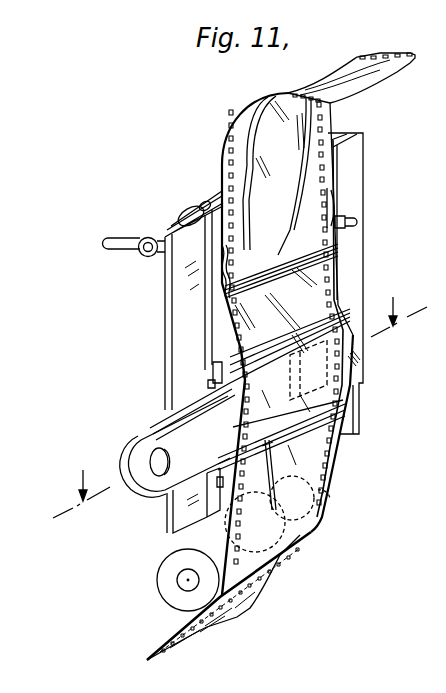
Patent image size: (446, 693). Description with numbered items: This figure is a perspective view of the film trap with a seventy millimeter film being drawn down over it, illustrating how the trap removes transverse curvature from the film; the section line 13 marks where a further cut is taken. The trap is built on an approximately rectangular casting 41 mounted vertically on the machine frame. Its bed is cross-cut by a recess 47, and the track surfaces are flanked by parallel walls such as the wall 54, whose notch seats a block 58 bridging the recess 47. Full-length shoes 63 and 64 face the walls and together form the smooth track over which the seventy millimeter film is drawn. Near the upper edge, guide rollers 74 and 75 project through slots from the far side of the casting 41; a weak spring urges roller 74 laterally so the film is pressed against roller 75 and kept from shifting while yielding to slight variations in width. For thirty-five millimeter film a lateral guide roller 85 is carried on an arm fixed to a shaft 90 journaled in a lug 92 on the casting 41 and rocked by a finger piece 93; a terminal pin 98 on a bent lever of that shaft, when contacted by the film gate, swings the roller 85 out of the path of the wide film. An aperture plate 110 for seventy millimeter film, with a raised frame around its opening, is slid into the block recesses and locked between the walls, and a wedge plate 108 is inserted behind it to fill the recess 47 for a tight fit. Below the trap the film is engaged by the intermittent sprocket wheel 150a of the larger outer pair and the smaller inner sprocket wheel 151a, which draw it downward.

The section line 13 is at (240, 397).
The casting 41 is at (180, 268).
The recess 47 is at (208, 382).
The wall 54 is at (205, 527).
The block 58 is at (213, 367).
The shoe 63 is at (221, 314).
The shoe 64 is at (340, 263).
The guide roller 74 is at (333, 200).
The guide roller 75 is at (221, 275).
The lateral guide roller 85 is at (207, 200).
The shaft 90 is at (184, 221).
The lug 92 is at (197, 207).
The finger piece 93 is at (125, 238).
The terminal pin 98 is at (358, 222).
The wedge plate 108 is at (127, 460).
The aperture plate 110 is at (162, 413).
The intermittent sprocket wheel 150a is at (161, 598).
The intermittent sprocket wheel 151a is at (168, 632).